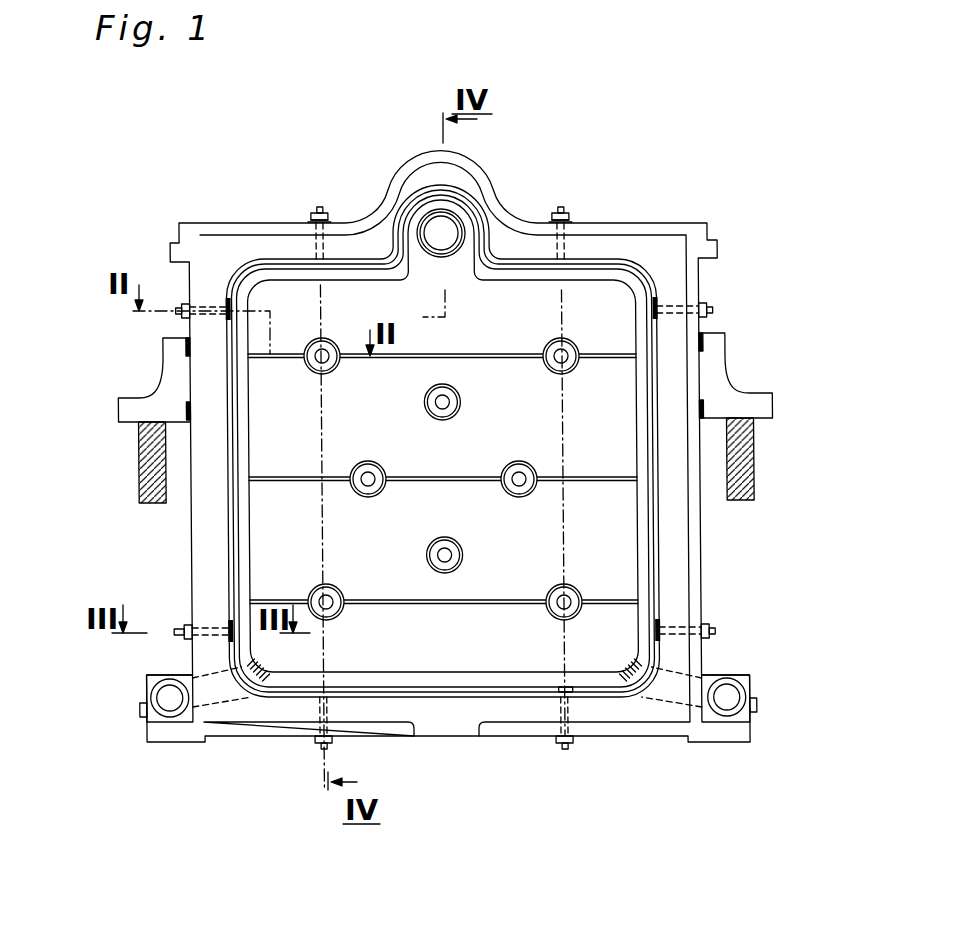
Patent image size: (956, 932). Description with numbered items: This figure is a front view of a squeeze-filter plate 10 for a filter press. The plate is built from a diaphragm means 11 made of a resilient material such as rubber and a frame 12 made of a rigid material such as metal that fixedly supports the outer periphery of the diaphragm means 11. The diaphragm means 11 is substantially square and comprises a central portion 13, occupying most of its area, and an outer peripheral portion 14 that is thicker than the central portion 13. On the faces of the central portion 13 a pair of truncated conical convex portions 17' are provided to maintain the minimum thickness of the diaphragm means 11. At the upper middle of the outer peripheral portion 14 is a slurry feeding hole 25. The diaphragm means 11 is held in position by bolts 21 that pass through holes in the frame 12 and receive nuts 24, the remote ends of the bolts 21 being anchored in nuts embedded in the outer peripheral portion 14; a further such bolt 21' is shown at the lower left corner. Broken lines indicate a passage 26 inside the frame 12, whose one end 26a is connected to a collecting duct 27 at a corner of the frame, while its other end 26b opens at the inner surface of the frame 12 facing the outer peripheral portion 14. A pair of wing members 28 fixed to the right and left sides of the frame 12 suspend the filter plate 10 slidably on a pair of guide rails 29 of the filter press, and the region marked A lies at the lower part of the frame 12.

The squeeze-filter plate 10 is at (622, 216).
The diaphragm means 11 is at (620, 382).
The frame 12 is at (663, 246).
The central portion 13 is at (530, 411).
The outer peripheral portion 14 is at (645, 508).
The convex portions 17' is at (587, 455).
The bolts 21 is at (495, 440).
The bolt 21' is at (153, 666).
The nuts 24 is at (313, 215).
The slurry feeding hole 25 is at (437, 227).
The passage 26 is at (213, 703).
The one end of passage 26a is at (183, 703).
The other end of passage 26b is at (247, 697).
The collecting duct 27 is at (165, 702).
The wing members 28 is at (157, 400).
The guide rails 29 is at (150, 450).
The region A is at (620, 702).